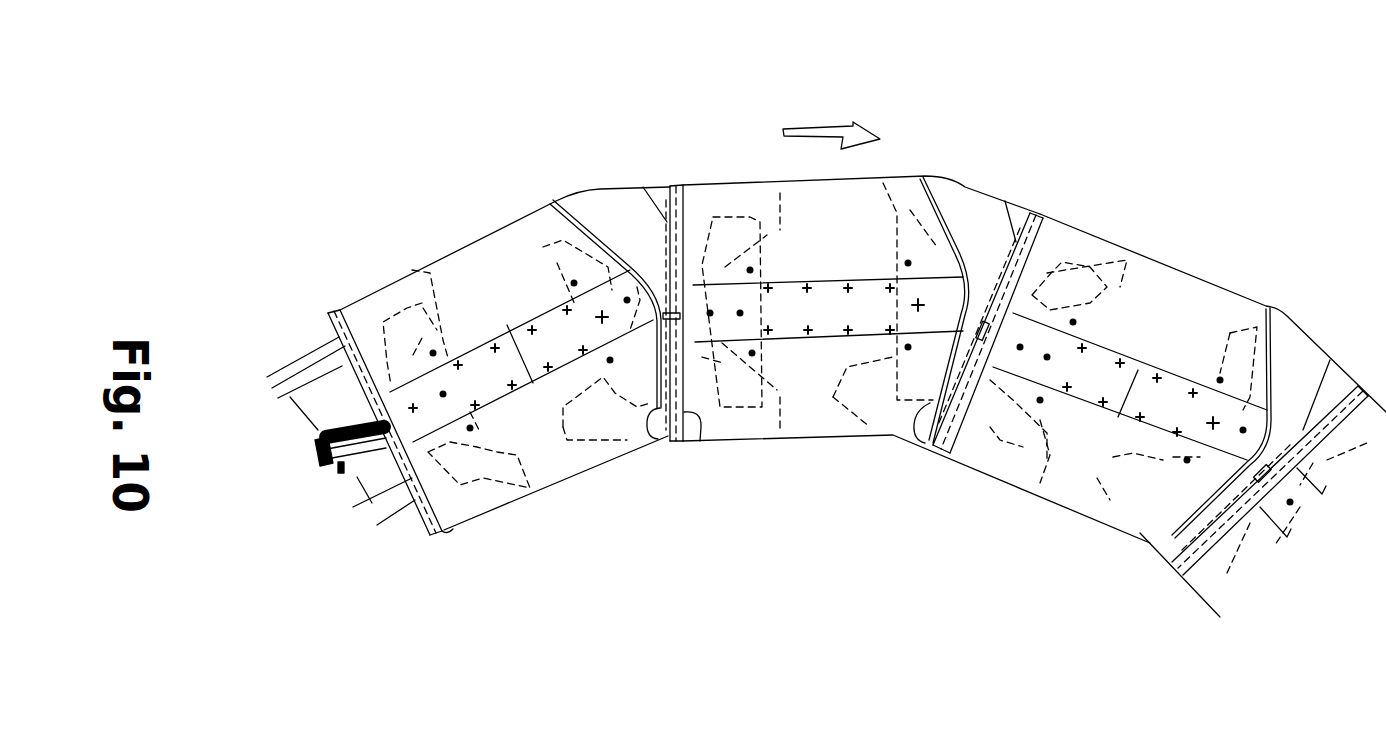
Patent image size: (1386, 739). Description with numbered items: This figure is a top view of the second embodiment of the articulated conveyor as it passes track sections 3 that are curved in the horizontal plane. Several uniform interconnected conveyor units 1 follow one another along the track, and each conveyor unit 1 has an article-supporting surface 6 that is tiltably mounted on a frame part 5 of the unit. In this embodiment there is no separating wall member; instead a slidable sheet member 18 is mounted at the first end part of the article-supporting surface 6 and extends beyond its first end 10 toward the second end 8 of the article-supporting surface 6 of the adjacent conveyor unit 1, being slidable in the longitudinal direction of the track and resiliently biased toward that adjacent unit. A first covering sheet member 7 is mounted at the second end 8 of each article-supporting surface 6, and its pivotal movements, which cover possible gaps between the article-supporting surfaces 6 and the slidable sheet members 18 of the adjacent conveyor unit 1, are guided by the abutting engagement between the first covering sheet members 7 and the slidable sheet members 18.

The conveyor unit 1 is at (432, 203).
The track section 3 is at (370, 517).
The frame part 5 is at (350, 473).
The article-supporting surface 6 is at (512, 243).
The first covering sheet member 7 is at (610, 203).
The second end 8 is at (648, 447).
The first end 10 is at (447, 534).
The slidable sheet member 18 is at (333, 303).